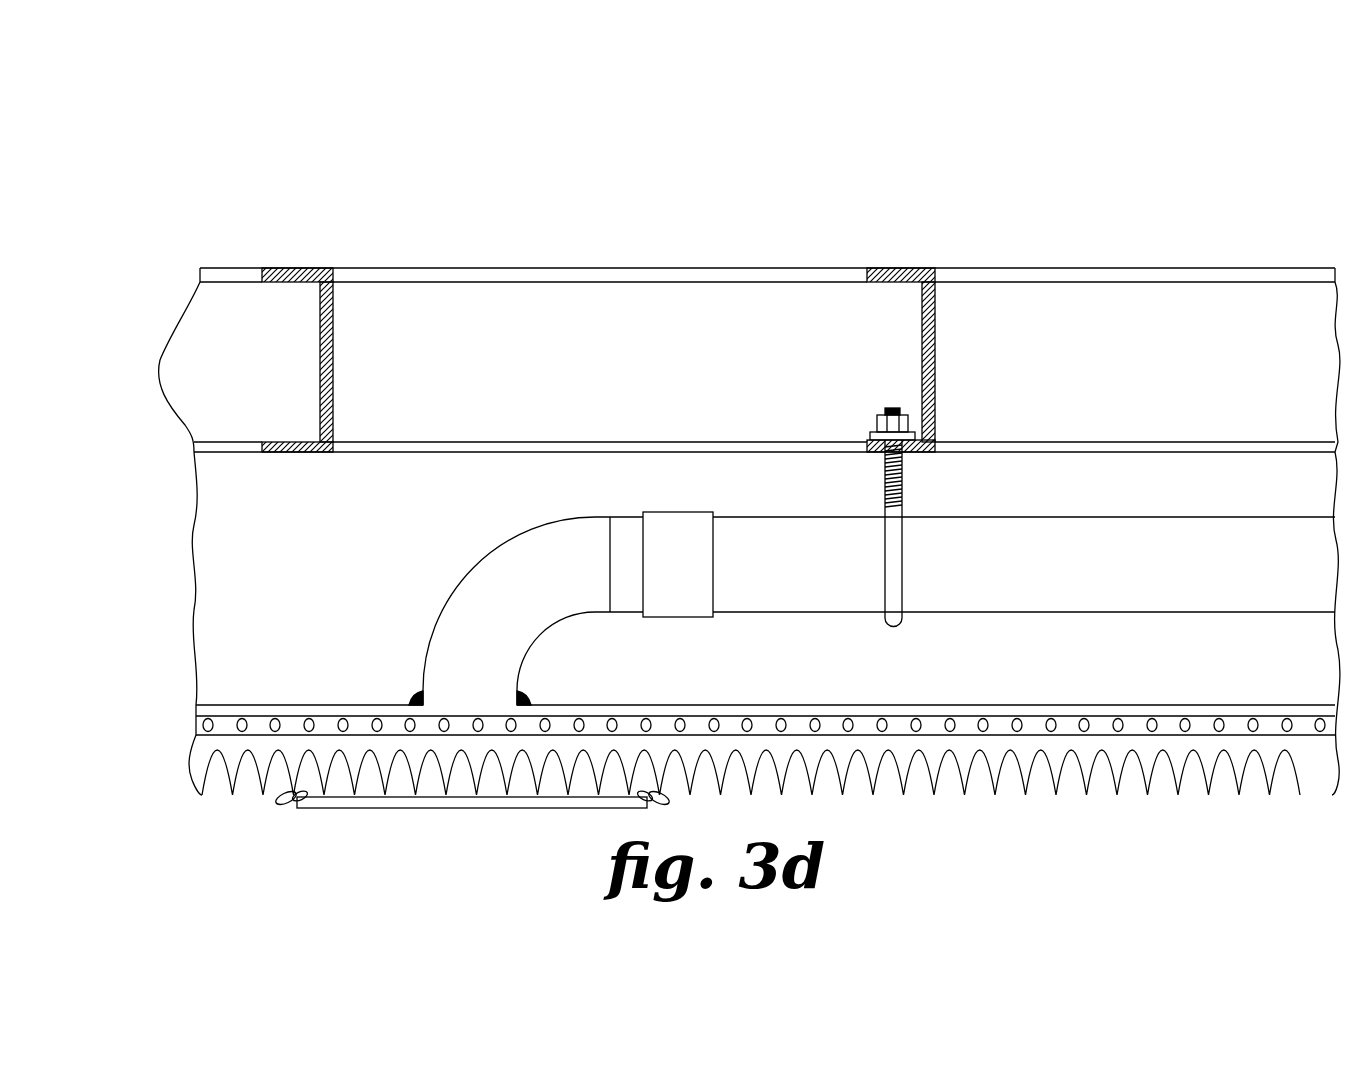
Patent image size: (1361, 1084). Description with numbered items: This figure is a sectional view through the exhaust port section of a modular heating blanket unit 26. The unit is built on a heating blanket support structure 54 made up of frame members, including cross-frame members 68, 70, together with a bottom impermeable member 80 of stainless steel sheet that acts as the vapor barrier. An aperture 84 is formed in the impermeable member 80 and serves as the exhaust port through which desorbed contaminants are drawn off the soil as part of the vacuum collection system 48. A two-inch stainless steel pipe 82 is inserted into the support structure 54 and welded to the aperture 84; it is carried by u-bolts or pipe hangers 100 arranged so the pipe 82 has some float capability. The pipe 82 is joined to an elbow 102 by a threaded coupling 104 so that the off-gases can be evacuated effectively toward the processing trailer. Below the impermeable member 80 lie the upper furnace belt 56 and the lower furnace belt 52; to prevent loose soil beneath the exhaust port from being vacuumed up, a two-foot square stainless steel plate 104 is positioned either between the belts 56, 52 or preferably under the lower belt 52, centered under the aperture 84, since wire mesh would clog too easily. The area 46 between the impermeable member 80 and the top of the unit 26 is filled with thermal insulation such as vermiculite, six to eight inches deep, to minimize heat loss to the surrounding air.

The heating blanket unit 26 is at (1052, 135).
The area 46 is at (372, 502).
The vacuum collection system 48 is at (1077, 484).
The lower furnace belt 52 is at (1060, 790).
The heating blanket support structure 54 is at (1246, 256).
The upper furnace belt 56 is at (775, 542).
The cross-frame member 68 is at (890, 268).
The cross-frame member 70 is at (301, 268).
The bottom impermeable member 80 is at (695, 705).
The piping means 82 is at (1173, 583).
The aperture 84 is at (473, 690).
The pipe hangers 100 is at (893, 515).
The elbow 102 is at (530, 558).
The threaded coupling 104 is at (687, 530).